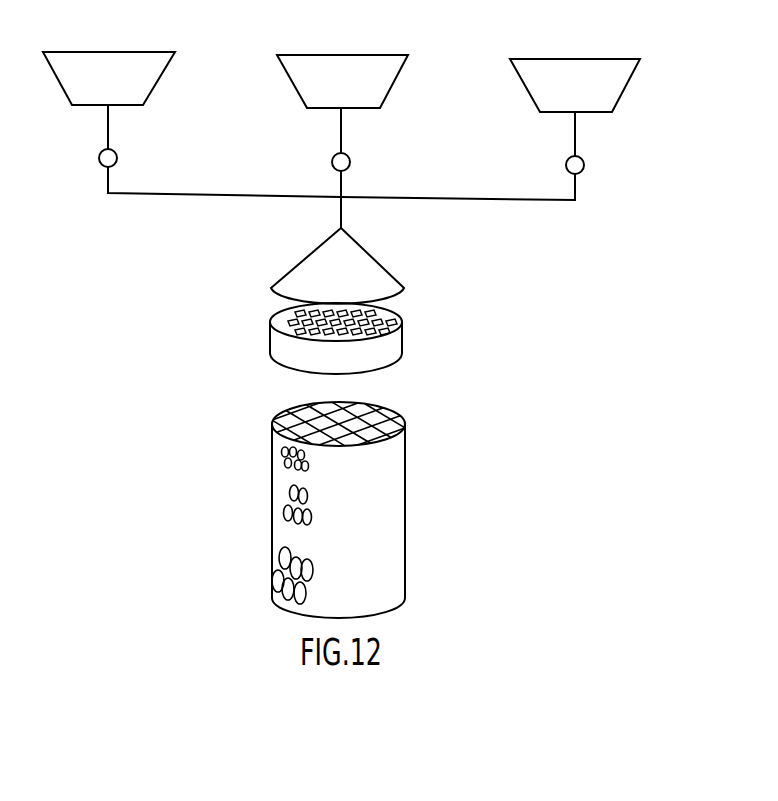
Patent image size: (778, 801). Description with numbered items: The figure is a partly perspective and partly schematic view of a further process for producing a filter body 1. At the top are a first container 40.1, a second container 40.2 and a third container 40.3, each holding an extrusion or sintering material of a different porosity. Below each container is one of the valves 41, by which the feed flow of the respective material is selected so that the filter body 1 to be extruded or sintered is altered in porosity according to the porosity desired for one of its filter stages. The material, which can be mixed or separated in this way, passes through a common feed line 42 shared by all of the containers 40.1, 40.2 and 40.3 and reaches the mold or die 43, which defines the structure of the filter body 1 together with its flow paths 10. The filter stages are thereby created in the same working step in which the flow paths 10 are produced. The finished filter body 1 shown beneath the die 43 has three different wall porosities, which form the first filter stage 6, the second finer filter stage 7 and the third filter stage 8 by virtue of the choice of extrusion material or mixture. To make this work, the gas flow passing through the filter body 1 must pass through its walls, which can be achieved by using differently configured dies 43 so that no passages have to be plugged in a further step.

The first container 40.1 is at (109, 100).
The second container 40.2 is at (342, 104).
The third container 40.3 is at (575, 107).
The valves 41 is at (117, 158).
The common feed line 42 is at (341, 209).
The mold or die 43 is at (383, 353).
The filter body 1 is at (405, 517).
The flow paths 10 is at (360, 407).
The third filter stage 8 is at (281, 452).
The second filter stage 7 is at (278, 500).
The first filter stage 6 is at (275, 566).